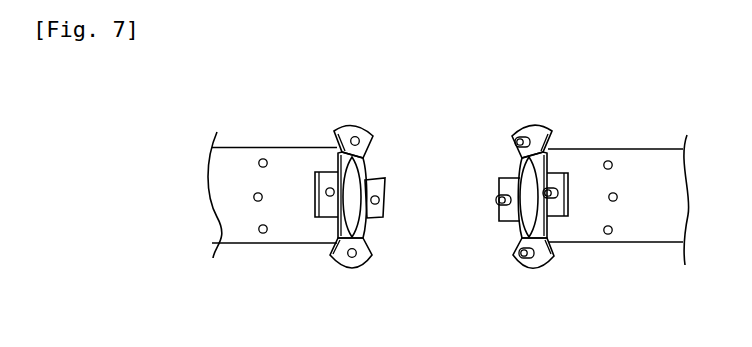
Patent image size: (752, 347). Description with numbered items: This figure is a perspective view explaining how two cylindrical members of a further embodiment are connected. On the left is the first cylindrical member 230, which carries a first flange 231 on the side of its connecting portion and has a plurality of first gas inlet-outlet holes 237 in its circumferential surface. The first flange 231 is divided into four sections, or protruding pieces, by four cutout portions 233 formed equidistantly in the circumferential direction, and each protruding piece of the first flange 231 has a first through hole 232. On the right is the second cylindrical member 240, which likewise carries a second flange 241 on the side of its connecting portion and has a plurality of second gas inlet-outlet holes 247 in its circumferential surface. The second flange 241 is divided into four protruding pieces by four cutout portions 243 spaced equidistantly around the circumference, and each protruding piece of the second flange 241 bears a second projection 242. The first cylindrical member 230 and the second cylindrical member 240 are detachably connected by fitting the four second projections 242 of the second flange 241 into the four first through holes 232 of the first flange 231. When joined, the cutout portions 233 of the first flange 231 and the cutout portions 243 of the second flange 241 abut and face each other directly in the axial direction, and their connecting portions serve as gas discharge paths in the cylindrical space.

The first cylindrical member 230 is at (277, 147).
The first flange 231 is at (371, 147).
The first through hole 232 is at (354, 137).
The cutout portion 233 is at (376, 181).
The first gas inlet-outlet hole 237 is at (262, 234).
The second cylindrical member 240 is at (635, 148).
The second flange 241 is at (541, 126).
The second projection 242 is at (513, 133).
The cutout portion 243 is at (510, 226).
The second gas inlet-outlet hole 247 is at (609, 234).